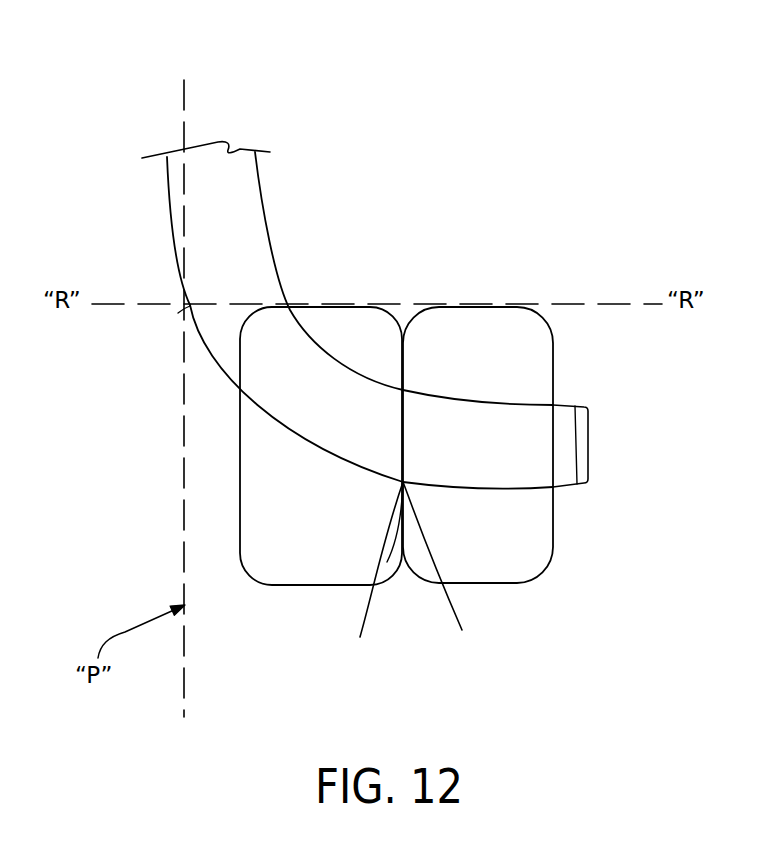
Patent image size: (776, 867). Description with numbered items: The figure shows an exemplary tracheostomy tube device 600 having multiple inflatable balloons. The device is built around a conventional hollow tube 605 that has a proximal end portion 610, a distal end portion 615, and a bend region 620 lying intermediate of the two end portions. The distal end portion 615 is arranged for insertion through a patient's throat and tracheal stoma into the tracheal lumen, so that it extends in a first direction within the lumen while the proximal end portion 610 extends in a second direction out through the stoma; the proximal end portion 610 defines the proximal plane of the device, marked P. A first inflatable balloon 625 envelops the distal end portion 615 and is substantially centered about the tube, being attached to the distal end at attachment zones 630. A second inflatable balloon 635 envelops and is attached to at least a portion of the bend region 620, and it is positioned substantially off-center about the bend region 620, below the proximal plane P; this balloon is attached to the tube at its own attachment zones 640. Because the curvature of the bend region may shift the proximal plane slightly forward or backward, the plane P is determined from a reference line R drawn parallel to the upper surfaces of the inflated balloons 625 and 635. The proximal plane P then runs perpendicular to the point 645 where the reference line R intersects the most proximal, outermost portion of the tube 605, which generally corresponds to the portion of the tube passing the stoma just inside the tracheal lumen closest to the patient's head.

The tracheostomy tube device 600 is at (634, 202).
The hollow tube 605 is at (238, 263).
The proximal end portion 610 is at (181, 268).
The distal end portion 615 is at (563, 450).
The bend region 620 is at (352, 427).
The first inflatable balloon 625 is at (487, 320).
The attachment zones 630 is at (555, 400).
The second inflatable balloon 635 is at (293, 547).
The attachment zones 640 is at (238, 390).
The point 645 is at (180, 312).